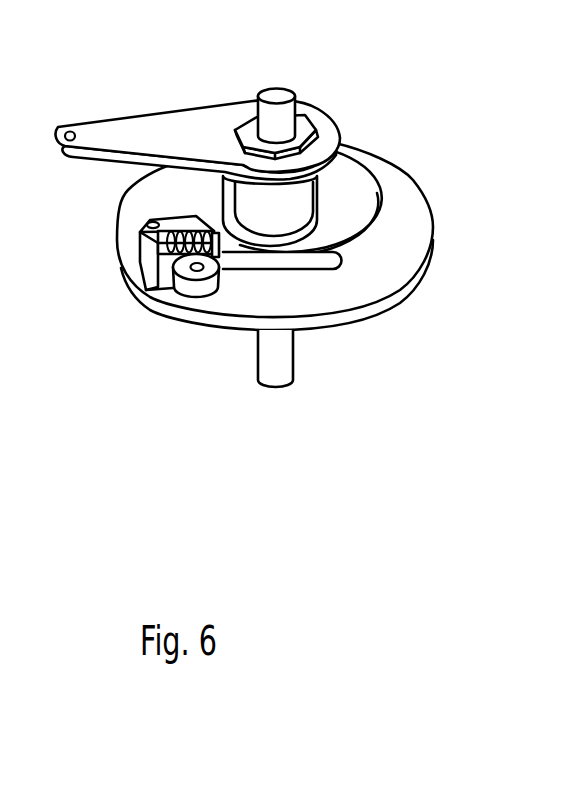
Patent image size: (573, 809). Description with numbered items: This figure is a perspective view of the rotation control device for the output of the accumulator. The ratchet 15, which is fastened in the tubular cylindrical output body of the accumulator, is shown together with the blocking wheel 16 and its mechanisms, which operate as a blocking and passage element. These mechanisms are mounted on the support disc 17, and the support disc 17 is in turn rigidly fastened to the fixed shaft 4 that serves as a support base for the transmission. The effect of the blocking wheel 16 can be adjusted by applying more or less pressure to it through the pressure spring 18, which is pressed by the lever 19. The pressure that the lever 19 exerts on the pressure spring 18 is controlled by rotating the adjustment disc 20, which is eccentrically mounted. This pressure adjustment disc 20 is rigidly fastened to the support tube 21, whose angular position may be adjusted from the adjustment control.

The fixed shaft 4 is at (277, 102).
The ratchet 15 is at (149, 297).
The blocking wheel 16 is at (212, 285).
The support disc 17 is at (312, 298).
The pressure spring 18 is at (187, 218).
The lever 19 is at (338, 266).
The adjustment disc 20 is at (361, 209).
The support tube 21 is at (94, 133).